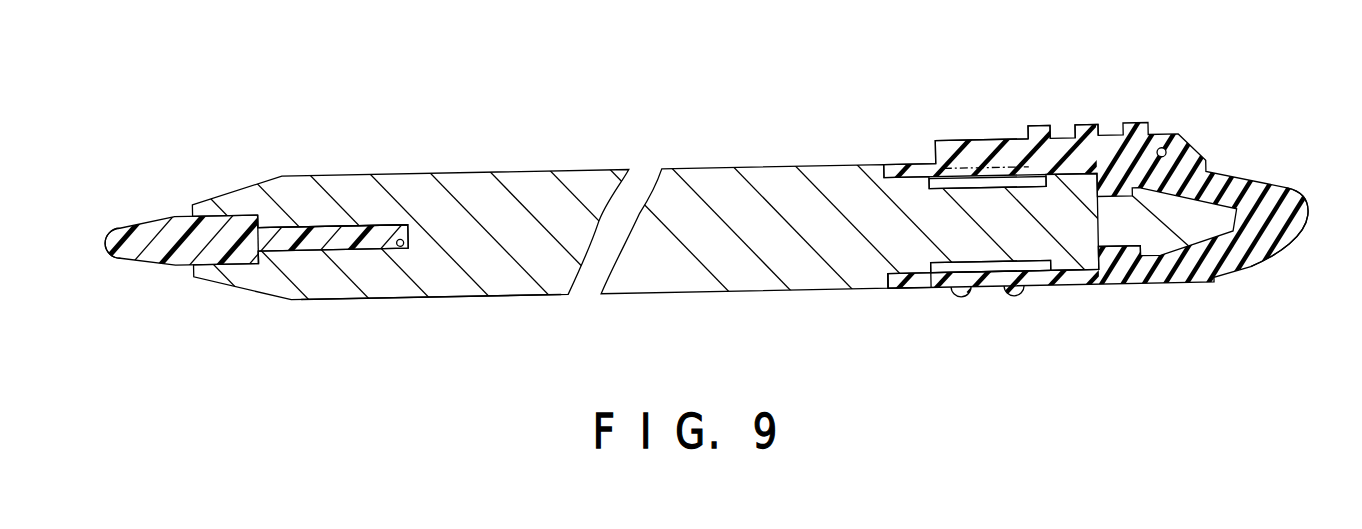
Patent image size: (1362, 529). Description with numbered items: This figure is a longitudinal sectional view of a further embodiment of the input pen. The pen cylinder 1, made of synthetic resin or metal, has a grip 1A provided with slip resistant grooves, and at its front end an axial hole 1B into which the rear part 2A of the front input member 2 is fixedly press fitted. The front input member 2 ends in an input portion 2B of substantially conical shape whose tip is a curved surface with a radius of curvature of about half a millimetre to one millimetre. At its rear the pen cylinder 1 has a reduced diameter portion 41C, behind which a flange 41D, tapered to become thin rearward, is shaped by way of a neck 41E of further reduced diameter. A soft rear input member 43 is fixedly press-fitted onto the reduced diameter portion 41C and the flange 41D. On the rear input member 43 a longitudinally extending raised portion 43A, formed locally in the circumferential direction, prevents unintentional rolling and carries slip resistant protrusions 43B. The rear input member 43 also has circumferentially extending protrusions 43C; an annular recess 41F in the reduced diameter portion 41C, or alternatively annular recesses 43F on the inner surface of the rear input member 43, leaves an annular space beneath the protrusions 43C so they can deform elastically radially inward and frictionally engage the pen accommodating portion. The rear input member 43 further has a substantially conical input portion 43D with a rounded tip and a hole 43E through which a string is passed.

The pen cylinder 1 is at (679, 230).
The grip 1A is at (508, 295).
The axial hole 1B is at (400, 250).
The front input member 2 is at (271, 234).
The rear part of front input member 2A is at (317, 239).
The input portion 2B is at (132, 240).
The reduced diameter portion 41C is at (1070, 278).
The flange 41D is at (1150, 262).
The neck 41E is at (1128, 250).
The annular recess 41F is at (916, 290).
The rear input member 43 is at (1044, 210).
The raised portion 43A is at (940, 147).
The slip resistant protrusions 43B is at (1080, 135).
The circumferentially extending protrusions 43C is at (1010, 309).
The input portion 43D is at (1287, 251).
The hole 43E is at (1163, 159).
The annular recesses 43F is at (993, 181).